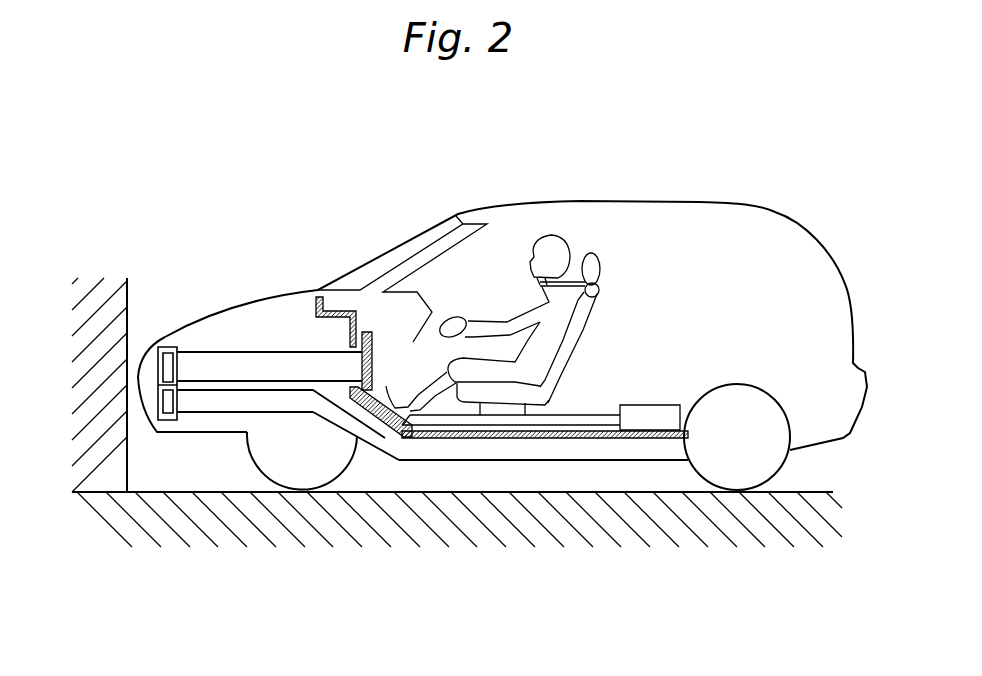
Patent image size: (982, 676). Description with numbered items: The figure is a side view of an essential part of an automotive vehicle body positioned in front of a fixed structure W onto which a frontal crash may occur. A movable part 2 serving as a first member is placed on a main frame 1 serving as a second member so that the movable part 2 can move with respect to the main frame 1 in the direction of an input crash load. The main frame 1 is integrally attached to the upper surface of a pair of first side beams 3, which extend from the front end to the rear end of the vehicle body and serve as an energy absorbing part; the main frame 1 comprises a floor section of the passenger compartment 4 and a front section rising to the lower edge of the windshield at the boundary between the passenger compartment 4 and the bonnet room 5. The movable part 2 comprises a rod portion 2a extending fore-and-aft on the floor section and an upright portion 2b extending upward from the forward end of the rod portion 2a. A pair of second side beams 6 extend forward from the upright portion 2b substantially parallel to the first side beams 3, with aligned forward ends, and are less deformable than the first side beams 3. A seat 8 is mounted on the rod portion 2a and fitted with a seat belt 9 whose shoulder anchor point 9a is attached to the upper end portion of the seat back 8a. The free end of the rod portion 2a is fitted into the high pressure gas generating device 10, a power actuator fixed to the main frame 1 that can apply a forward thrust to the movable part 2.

The main frame 1 is at (557, 427).
The movable part 2 is at (500, 516).
The rod portion 2a is at (449, 420).
The upright portion 2b is at (386, 428).
The first side beams 3 is at (215, 408).
The passenger compartment 4 is at (708, 272).
The bonnet room 5 is at (271, 344).
The second side beams 6 is at (245, 360).
The seat 8 is at (587, 366).
The seat back 8a is at (597, 303).
The seat belt 9 is at (578, 266).
The shoulder anchor point 9a is at (598, 262).
The high pressure gas generating device 10 is at (647, 423).
The fixed structure W is at (128, 336).